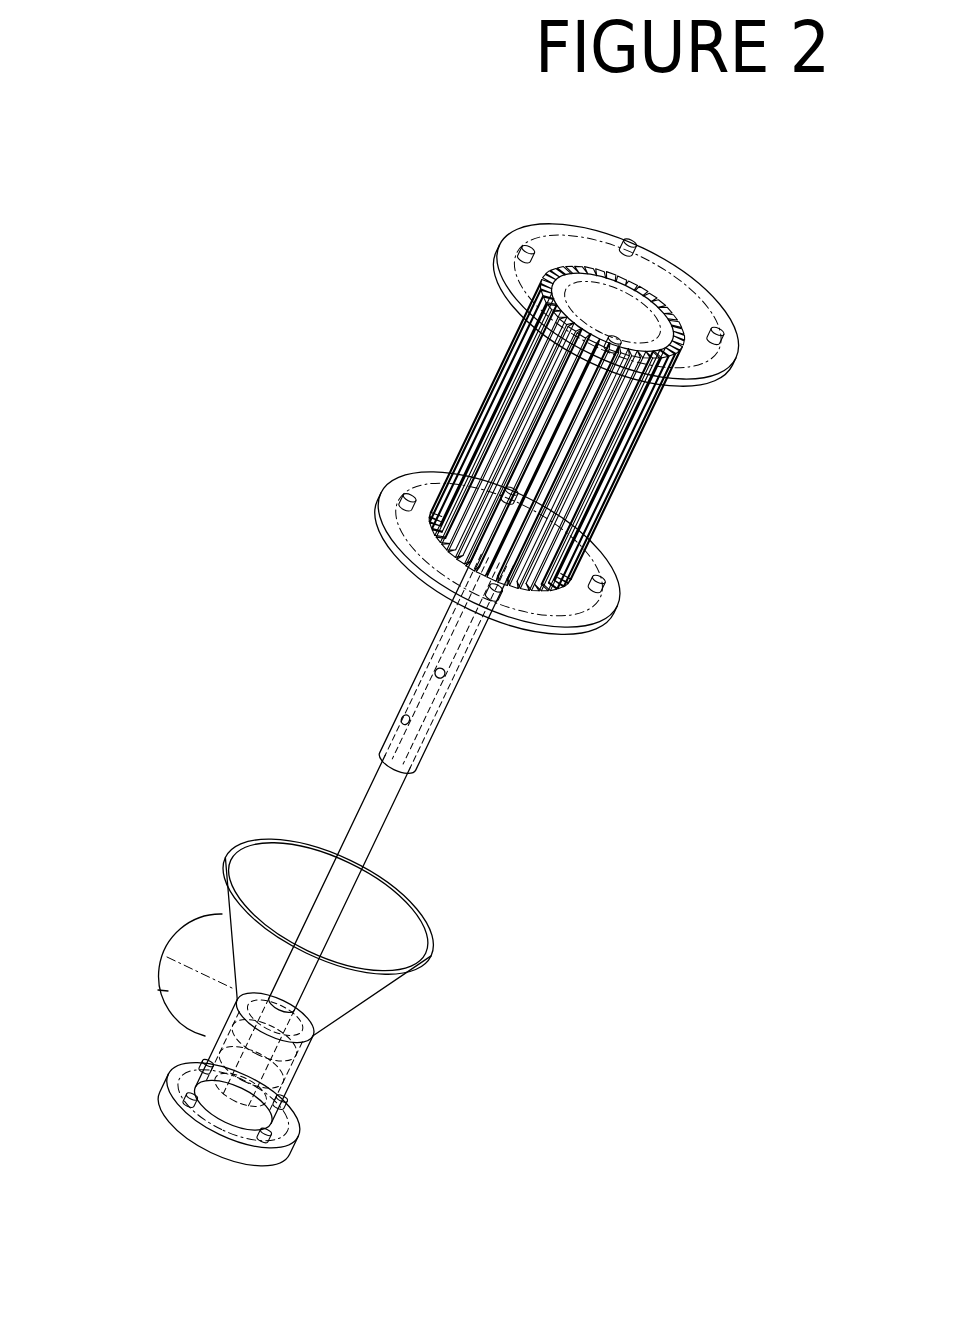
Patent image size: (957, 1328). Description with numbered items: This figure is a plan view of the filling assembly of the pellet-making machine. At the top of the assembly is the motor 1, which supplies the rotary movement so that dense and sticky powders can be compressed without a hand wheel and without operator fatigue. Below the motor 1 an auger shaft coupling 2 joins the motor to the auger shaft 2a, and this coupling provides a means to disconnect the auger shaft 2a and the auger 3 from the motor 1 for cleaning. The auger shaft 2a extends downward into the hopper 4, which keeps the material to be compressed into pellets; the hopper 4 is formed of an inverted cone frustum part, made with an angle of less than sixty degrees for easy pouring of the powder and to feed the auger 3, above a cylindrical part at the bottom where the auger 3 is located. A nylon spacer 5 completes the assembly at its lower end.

The motor 1 is at (615, 300).
The auger shaft coupling 2 is at (452, 690).
The auger shaft 2a is at (377, 832).
The auger 3 is at (228, 1052).
The hopper 4 is at (330, 990).
The nylon spacer 5 is at (211, 1140).